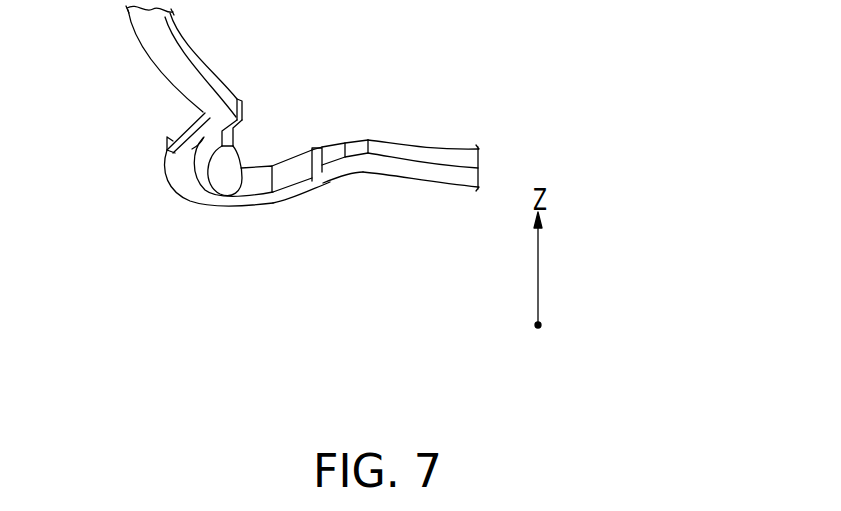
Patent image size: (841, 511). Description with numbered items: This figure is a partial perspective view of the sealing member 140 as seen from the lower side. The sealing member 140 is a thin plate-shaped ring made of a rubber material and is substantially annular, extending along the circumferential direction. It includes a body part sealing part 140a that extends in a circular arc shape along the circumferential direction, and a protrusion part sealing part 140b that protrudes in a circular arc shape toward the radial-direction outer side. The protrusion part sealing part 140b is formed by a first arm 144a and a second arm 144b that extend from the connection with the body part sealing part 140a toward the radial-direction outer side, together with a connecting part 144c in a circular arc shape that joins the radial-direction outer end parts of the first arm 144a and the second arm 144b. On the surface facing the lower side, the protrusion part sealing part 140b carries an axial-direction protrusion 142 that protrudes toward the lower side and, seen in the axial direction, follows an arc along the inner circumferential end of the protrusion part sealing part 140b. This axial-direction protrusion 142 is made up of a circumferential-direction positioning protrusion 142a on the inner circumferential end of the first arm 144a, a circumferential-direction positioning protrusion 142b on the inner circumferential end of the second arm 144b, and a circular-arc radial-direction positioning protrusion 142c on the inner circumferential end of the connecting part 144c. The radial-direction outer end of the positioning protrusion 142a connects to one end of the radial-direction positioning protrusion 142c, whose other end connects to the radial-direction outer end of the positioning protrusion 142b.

The sealing member 140 is at (272, 183).
The body part sealing part 140a is at (443, 177).
The protrusion part sealing part 140b is at (183, 121).
The axial-direction protrusion 142 is at (243, 249).
The circumferential-direction positioning protrusion 142a is at (307, 226).
The circumferential-direction positioning protrusion 142b is at (222, 155).
The radial-direction positioning protrusion 142c is at (241, 200).
The first arm 144a is at (333, 180).
The second arm 144b is at (198, 163).
The connecting part 144c is at (173, 177).